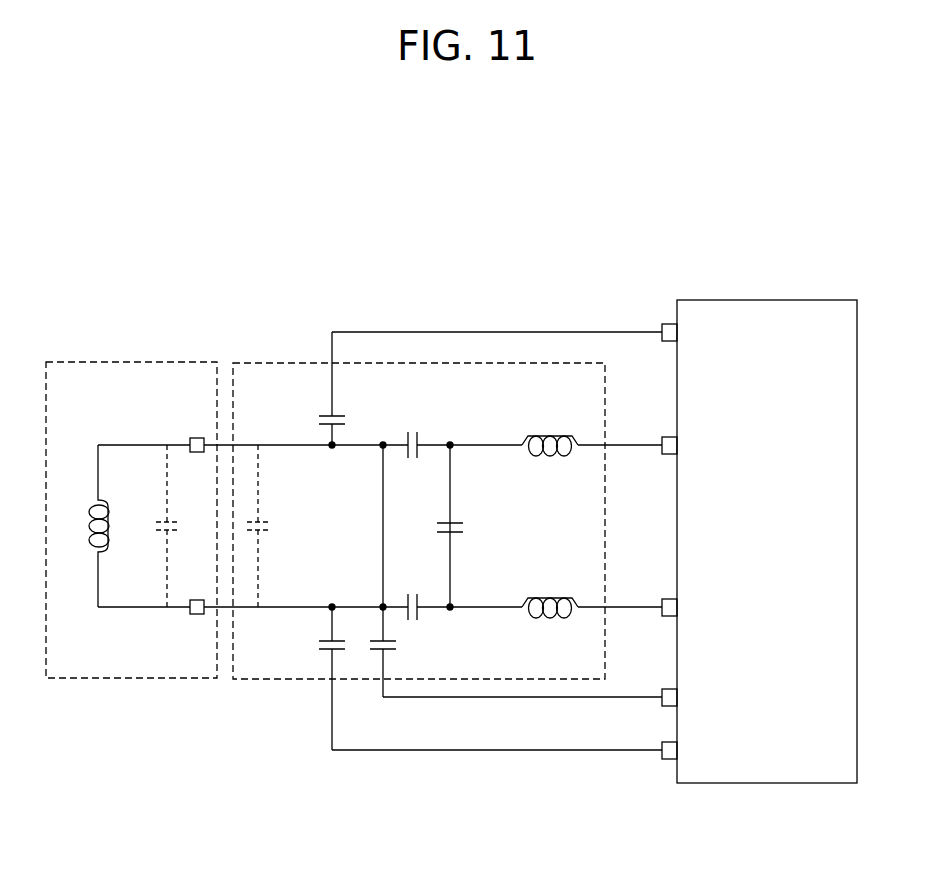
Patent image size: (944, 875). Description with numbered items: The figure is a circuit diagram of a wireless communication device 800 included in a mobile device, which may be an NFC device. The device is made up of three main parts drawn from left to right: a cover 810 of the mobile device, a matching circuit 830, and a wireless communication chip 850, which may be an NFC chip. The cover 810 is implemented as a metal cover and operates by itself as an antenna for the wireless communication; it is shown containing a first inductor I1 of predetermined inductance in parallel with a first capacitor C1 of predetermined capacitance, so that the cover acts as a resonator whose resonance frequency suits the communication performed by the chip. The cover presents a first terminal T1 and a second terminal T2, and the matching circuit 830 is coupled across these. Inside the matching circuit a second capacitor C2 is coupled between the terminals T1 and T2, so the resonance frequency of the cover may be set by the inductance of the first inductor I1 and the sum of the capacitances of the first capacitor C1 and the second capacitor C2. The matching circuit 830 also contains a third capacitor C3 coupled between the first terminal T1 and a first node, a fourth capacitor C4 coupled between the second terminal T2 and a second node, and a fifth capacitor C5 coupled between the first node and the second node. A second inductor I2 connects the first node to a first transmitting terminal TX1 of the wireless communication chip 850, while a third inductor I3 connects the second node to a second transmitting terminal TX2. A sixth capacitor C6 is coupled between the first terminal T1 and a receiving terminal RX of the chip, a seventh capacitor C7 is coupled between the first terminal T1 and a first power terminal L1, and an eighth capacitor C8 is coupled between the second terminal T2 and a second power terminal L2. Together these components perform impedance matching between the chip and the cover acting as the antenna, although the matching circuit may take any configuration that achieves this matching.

The wireless communication device 800 is at (465, 200).
The cover 810 is at (120, 362).
The matching circuit 830 is at (280, 363).
The wireless communication chip 850 is at (764, 300).
The first inductor I1 is at (84, 526).
The first capacitor C1 is at (154, 526).
The second capacitor C2 is at (271, 526).
The third capacitor C3 is at (413, 432).
The fourth capacitor C4 is at (413, 594).
The fifth capacitor C5 is at (463, 514).
The sixth capacitor C6 is at (316, 388).
The seventh capacitor C7 is at (397, 652).
The eighth capacitor C8 is at (316, 678).
The second inductor I2 is at (550, 431).
The third inductor I3 is at (550, 593).
The first terminal T1 is at (196, 430).
The second terminal T2 is at (196, 594).
The receiving terminal RX is at (650, 323).
The first transmitting terminal TX1 is at (649, 436).
The second transmitting terminal TX2 is at (649, 598).
The first power terminal L1 is at (652, 687).
The second power terminal L2 is at (652, 741).